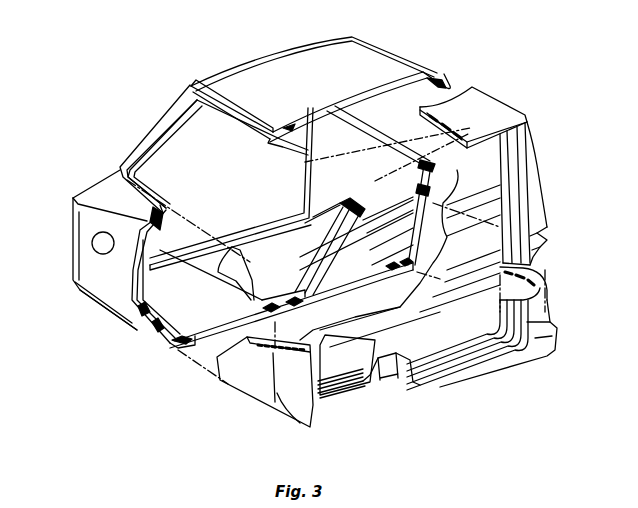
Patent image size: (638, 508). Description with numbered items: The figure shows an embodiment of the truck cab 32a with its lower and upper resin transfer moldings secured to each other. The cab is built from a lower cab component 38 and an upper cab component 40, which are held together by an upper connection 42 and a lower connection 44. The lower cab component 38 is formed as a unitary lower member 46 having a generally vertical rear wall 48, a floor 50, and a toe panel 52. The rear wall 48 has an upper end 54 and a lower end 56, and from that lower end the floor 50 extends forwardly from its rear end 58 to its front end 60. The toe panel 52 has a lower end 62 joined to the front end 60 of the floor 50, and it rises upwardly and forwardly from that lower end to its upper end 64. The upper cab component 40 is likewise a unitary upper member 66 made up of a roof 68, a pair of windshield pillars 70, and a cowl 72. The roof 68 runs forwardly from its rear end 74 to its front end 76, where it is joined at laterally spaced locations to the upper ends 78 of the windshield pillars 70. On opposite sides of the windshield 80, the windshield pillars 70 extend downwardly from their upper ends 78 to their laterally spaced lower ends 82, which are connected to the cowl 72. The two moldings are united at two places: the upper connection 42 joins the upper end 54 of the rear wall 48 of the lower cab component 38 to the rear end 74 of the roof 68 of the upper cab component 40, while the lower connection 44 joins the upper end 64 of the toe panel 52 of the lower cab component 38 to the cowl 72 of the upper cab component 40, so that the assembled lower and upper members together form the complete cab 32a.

The truck cab 32a is at (537, 100).
The lower cab component 38 is at (561, 356).
The upper cab component 40 is at (186, 82).
The upper connection 42 is at (533, 125).
The lower connection 44 is at (277, 414).
The lower member 46 is at (541, 364).
The rear wall 48 is at (492, 247).
The floor 50 is at (418, 337).
The toe panel 52 is at (155, 348).
The upper end of rear wall 54 is at (528, 134).
The lower end of rear wall 56 is at (532, 265).
The rear end of floor 58 is at (473, 335).
The front end of floor 60 is at (188, 322).
The lower end of toe panel 62 is at (172, 352).
The upper end of toe panel 64 is at (137, 330).
The upper member 66 is at (196, 79).
The roof 68 is at (290, 84).
The windshield pillars 70 is at (146, 124).
The cowl 72 is at (121, 290).
The rear end of roof 74 is at (418, 60).
The front end of roof 76 is at (257, 118).
The upper ends of windshield pillars 78 is at (195, 105).
The windshield 80 is at (229, 133).
The lower ends of windshield pillars 82 is at (110, 181).